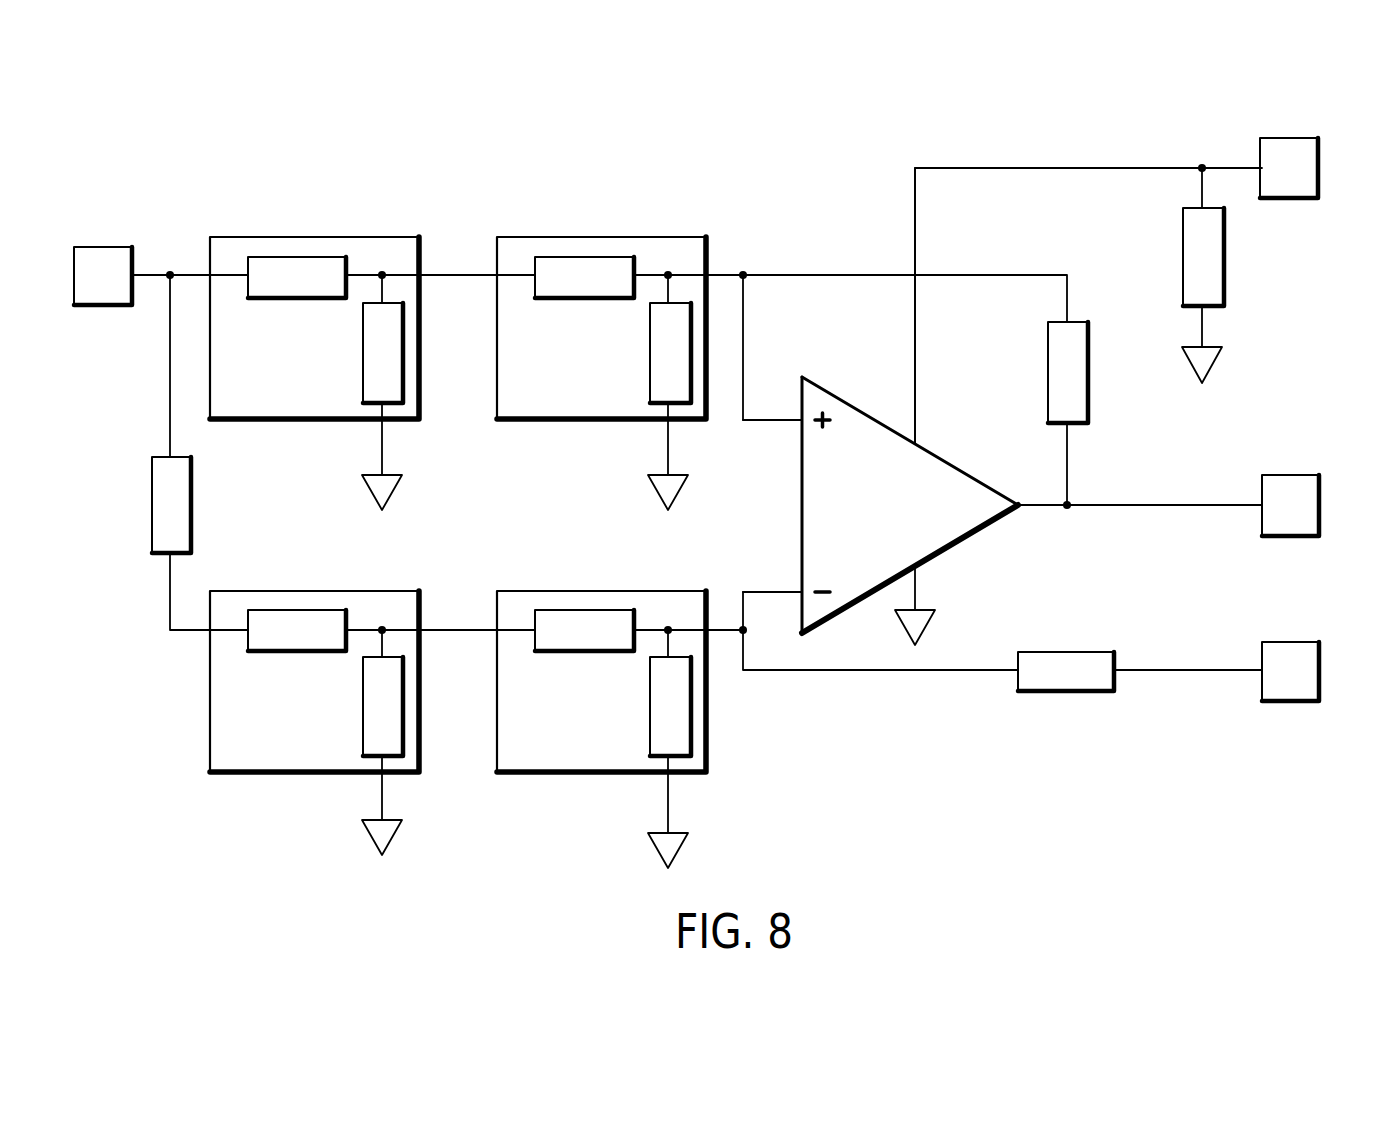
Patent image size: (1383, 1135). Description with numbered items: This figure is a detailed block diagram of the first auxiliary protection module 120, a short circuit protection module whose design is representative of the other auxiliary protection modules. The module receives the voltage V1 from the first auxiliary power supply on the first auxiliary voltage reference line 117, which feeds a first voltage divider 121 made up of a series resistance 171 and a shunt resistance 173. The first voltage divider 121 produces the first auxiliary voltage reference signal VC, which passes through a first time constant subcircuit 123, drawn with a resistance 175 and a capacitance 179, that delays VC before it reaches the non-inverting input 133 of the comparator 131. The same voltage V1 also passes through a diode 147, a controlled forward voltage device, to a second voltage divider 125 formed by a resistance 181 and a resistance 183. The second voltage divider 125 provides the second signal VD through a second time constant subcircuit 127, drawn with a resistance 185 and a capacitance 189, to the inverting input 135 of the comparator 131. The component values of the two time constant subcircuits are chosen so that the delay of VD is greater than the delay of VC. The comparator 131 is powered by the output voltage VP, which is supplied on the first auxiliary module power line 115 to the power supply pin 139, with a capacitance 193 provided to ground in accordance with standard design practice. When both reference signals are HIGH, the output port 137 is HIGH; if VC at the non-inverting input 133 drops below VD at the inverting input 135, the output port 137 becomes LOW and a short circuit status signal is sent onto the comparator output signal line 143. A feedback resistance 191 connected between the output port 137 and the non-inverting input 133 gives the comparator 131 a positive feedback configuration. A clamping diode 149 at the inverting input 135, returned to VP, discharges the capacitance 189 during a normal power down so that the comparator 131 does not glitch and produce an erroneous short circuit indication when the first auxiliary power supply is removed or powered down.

The first auxiliary module power line 115 is at (1238, 168).
The first auxiliary voltage reference line 117 is at (156, 270).
The first auxiliary protection module 120 is at (447, 152).
The first voltage divider 121 is at (272, 419).
The first time constant subcircuit 123 is at (552, 419).
The second voltage divider 125 is at (268, 772).
The second time constant subcircuit 127 is at (575, 772).
The comparator 131 is at (967, 543).
The non-inverting input 133 is at (801, 425).
The inverting input 135 is at (801, 590).
The output port 137 is at (1022, 508).
The power supply pin 139 is at (915, 443).
The comparator output signal line 143 is at (1127, 508).
The diode 147 is at (190, 508).
The clamping diode 149 is at (1068, 652).
The resistance 171 is at (298, 256).
The resistance 173 is at (402, 373).
The resistor of time constant C 175 is at (586, 256).
The capacitor of time constant C 179 is at (660, 419).
The resistance 181 is at (297, 609).
The resistance 183 is at (402, 725).
The resistor of time constant D 185 is at (586, 609).
The capacitance 189 is at (690, 727).
The feedback resistance 191 is at (1087, 398).
The capacitance 193 is at (1223, 283).